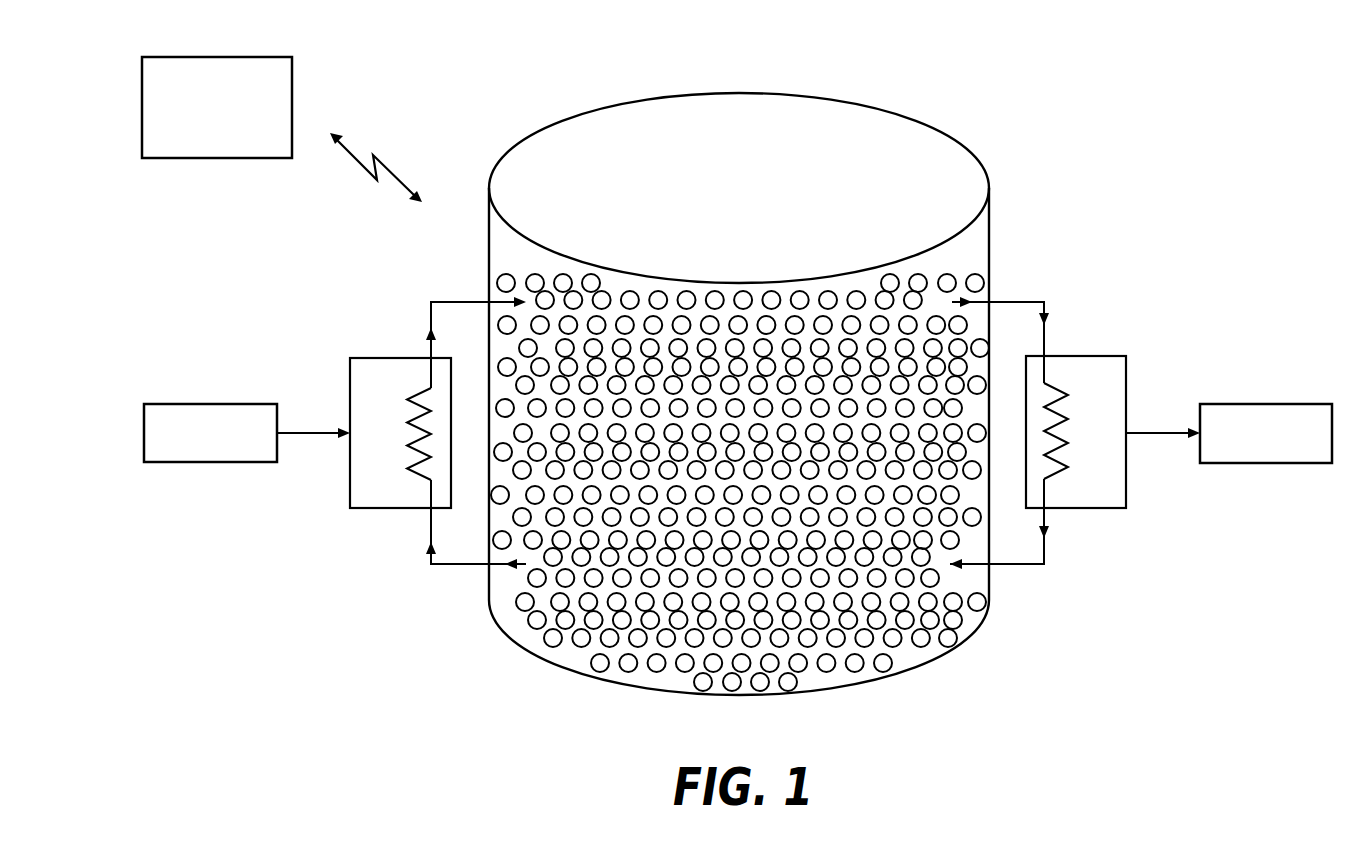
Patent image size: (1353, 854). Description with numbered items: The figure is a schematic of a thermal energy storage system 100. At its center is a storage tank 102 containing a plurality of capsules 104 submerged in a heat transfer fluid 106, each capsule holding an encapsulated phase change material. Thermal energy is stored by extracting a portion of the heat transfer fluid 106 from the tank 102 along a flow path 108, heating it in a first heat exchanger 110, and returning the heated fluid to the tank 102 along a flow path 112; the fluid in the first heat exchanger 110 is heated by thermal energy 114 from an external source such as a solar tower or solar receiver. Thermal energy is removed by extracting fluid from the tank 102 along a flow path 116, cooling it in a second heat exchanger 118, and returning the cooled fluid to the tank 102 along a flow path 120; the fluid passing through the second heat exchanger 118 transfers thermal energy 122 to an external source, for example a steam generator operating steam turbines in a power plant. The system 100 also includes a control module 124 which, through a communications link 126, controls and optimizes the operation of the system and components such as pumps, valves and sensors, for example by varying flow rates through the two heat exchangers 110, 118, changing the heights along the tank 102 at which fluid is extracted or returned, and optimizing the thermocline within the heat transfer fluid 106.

The thermal energy storage system 100 is at (1208, 109).
The storage tank 102 is at (757, 193).
The capsules 104 is at (967, 258).
The heat transfer fluid 106 is at (489, 243).
The flow path 108 is at (445, 566).
The first heat exchanger 110 is at (365, 508).
The flow path 112 is at (431, 301).
The thermal energy 114 is at (172, 403).
The flow path 116 is at (1046, 300).
The second heat exchanger 118 is at (1126, 356).
The flow path 120 is at (1045, 553).
The thermal energy 122 is at (1258, 404).
The control module 124 is at (292, 107).
The communications link 126 is at (388, 163).